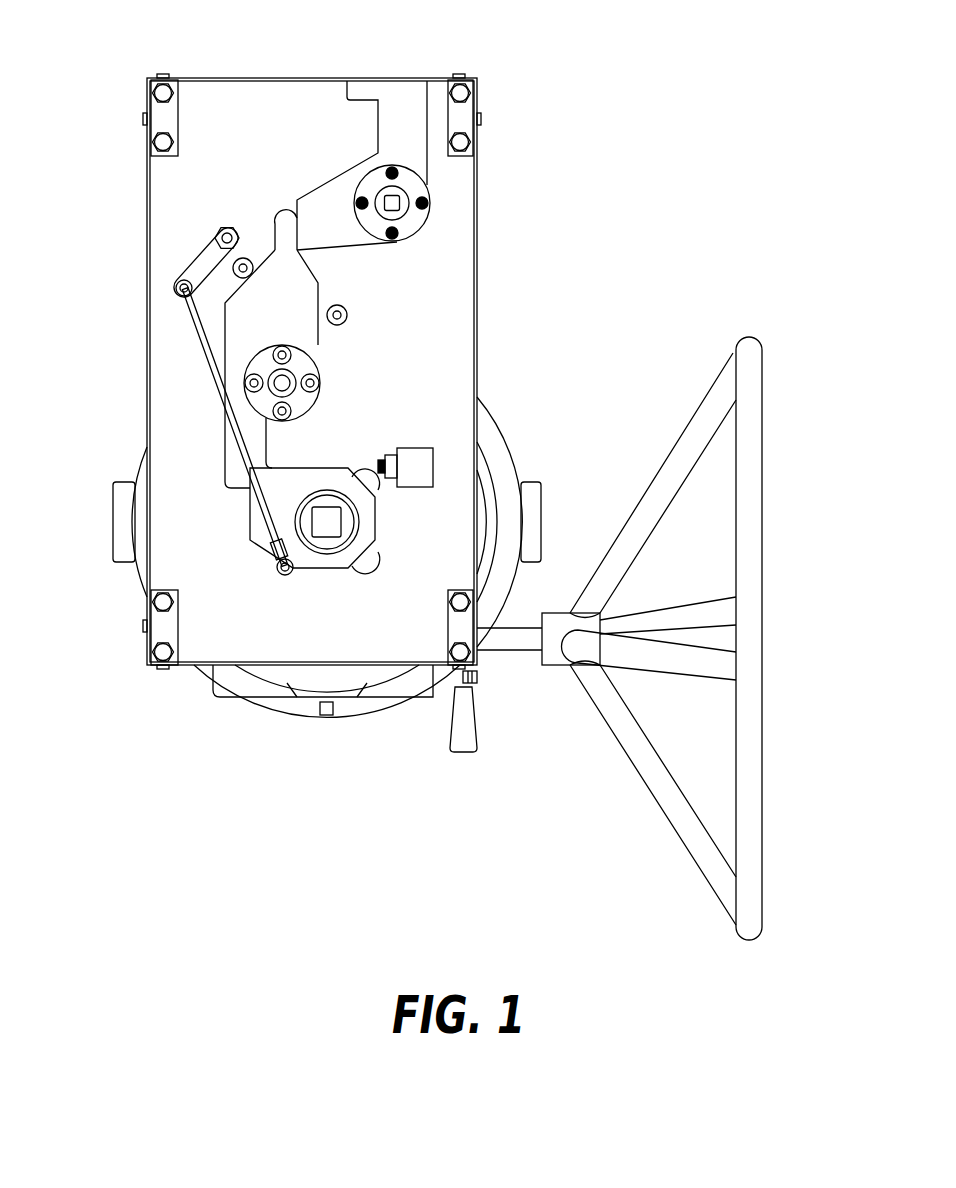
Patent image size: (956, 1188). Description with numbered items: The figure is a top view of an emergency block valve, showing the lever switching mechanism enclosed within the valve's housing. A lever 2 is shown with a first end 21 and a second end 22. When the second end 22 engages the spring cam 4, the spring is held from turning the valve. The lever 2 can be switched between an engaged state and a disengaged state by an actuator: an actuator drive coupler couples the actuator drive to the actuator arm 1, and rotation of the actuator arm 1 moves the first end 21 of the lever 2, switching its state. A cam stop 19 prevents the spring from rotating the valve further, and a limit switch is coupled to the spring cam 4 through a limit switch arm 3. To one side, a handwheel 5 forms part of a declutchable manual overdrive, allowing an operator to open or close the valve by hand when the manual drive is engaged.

The actuator arm 1 is at (400, 97).
The lever 2 is at (300, 300).
The limit switch arm 3 is at (184, 288).
The spring cam 4 is at (327, 540).
The handwheel 5 is at (763, 420).
The cam stop 19 is at (418, 457).
The first end 21 is at (290, 227).
The second end 22 is at (243, 480).